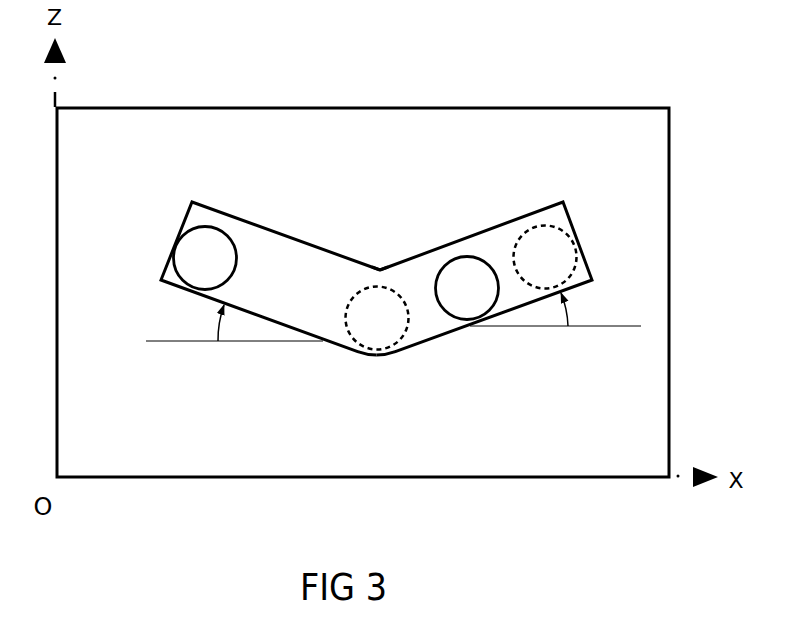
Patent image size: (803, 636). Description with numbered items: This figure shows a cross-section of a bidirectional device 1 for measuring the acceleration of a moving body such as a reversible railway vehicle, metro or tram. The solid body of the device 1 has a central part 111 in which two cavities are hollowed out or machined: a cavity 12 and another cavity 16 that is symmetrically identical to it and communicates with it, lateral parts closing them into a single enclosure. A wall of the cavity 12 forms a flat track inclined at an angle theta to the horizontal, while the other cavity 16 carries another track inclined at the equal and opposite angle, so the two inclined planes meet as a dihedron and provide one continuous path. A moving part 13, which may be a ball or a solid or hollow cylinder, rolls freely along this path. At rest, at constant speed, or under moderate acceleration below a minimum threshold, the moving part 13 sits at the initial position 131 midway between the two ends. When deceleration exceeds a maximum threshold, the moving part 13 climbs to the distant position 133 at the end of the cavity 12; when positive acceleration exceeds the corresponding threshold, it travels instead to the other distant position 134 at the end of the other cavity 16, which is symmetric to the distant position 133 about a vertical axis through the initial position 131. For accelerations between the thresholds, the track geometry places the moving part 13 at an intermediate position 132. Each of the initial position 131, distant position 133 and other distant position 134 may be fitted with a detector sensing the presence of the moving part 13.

The device 1 is at (366, 252).
The central part 111 is at (300, 147).
The initial position 131 is at (380, 265).
The intermediate position 132 is at (459, 232).
The distant position 133 is at (538, 202).
The other distant position 134 is at (218, 202).
The moving part 13 is at (470, 303).
The other cavity 16 is at (248, 355).
The cavity 12 is at (540, 335).